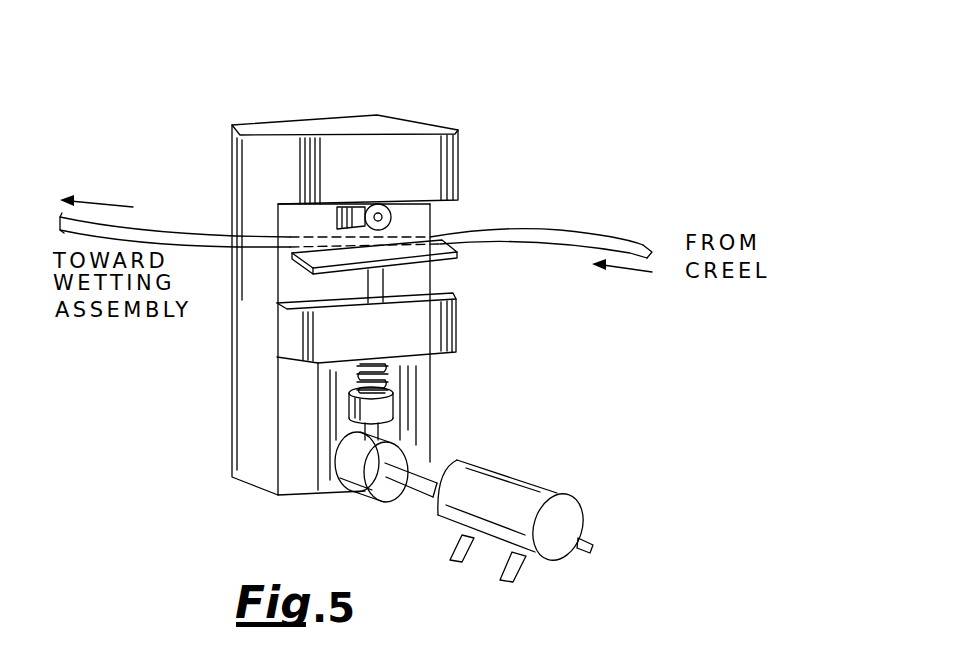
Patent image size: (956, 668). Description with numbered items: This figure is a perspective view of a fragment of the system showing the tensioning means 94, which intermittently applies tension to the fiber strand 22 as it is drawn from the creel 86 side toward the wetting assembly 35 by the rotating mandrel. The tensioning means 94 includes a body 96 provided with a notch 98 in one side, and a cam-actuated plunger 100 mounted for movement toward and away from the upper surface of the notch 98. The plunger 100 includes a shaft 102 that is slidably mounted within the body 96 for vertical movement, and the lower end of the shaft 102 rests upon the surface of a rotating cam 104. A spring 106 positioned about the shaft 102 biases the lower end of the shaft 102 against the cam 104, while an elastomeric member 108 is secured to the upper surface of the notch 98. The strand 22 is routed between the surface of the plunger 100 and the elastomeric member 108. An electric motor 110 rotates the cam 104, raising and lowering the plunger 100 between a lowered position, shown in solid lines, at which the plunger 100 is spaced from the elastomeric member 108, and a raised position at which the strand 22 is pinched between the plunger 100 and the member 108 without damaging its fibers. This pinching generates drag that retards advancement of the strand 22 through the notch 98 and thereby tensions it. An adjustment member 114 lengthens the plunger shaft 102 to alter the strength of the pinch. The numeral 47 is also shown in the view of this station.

The tensioning means 94 is at (378, 84).
The station 47 is at (562, 84).
The body 96 is at (462, 143).
The notch 98 is at (443, 206).
The elastomeric member 108 is at (350, 206).
The fiber strand 22 is at (579, 235).
The shaft 102 is at (452, 276).
The cam-actuated plunger 100 is at (275, 267).
The spring 106 is at (435, 374).
The adjustment member 114 is at (394, 405).
The cam 104 is at (418, 466).
The electric motor 110 is at (533, 478).
The wetting assembly 35 is at (119, 336).
The creel 86 is at (807, 271).